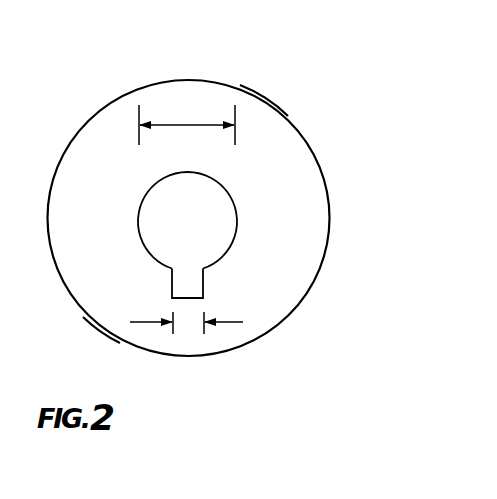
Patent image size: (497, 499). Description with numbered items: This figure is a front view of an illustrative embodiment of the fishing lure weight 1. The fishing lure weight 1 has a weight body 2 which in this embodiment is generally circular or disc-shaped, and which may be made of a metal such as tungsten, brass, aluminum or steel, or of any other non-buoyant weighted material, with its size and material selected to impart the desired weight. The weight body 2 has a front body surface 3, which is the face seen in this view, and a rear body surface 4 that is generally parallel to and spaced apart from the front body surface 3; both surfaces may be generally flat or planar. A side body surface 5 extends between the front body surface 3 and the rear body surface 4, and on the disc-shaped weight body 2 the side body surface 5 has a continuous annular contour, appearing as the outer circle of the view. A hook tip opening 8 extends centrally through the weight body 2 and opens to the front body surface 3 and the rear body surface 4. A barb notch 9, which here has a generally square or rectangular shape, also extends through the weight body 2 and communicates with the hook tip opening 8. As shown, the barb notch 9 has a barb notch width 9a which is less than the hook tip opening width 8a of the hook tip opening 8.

The fishing lure weight 1 is at (100, 76).
The weight body 2 is at (291, 114).
The front body surface 3 is at (289, 221).
The rear body surface 4 is at (219, 22).
The side body surface 5 is at (82, 318).
The hook tip opening 8 is at (179, 199).
The hook tip opening width 8a is at (208, 127).
The barb notch 9 is at (186, 287).
The barb notch width 9a is at (235, 322).